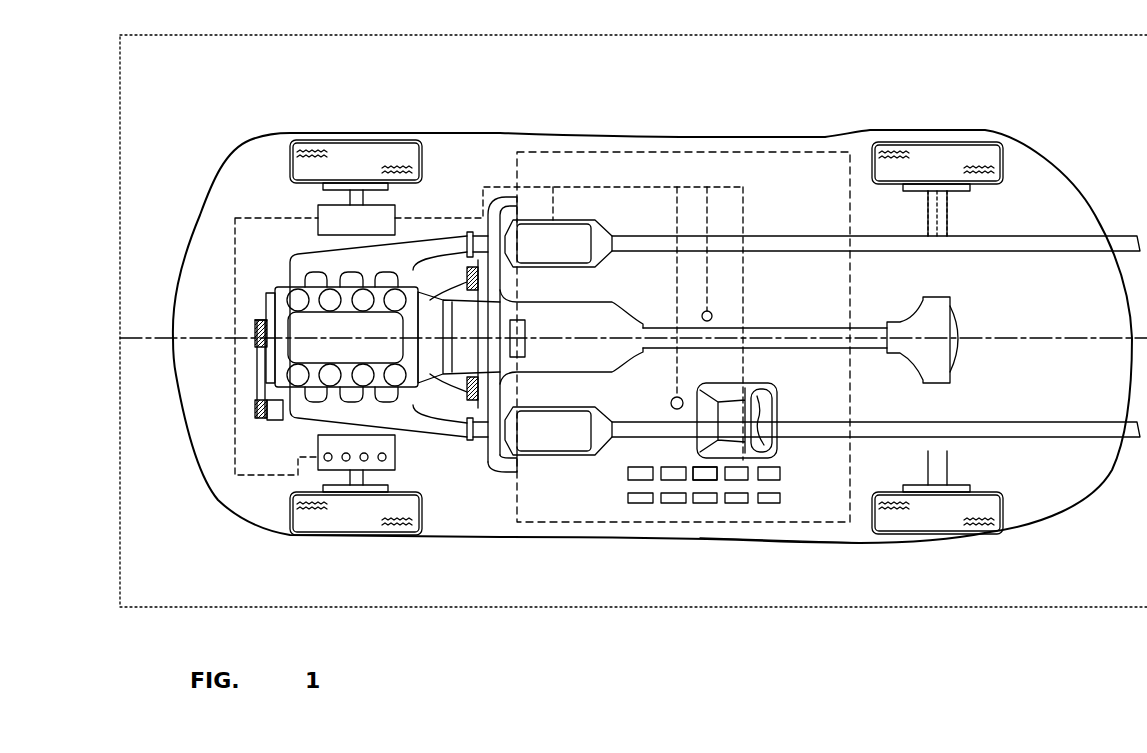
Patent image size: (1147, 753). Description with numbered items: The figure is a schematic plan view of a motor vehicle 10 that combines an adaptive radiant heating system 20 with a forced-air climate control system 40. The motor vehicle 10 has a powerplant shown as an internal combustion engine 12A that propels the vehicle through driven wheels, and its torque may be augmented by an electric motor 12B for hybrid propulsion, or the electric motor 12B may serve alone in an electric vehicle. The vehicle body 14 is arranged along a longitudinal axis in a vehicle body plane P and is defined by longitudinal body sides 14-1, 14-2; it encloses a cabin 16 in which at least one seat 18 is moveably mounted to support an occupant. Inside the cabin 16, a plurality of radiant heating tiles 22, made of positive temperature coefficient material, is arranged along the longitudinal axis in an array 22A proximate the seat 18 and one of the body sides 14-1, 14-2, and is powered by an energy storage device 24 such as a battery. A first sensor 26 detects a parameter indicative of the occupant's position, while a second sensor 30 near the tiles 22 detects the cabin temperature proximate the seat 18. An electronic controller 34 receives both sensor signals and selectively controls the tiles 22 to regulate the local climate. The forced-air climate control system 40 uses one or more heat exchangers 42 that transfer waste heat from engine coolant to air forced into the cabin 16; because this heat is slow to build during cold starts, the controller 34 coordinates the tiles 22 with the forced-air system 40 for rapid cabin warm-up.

The motor vehicle 10 is at (776, 123).
The internal combustion engine 12A is at (266, 302).
The electric motor 12B is at (518, 357).
The vehicle body 14 is at (1046, 375).
The longitudinal body side 14-1 is at (805, 538).
The longitudinal body side 14-2 is at (823, 137).
The cabin 16 is at (718, 523).
The seat 18 is at (779, 406).
The adaptive radiant heating system 20 is at (808, 297).
The radiant heating tiles 22 is at (692, 497).
The array 22A is at (708, 484).
The energy storage device 24 is at (235, 477).
The first sensor 26 is at (670, 402).
The second sensor 30 is at (713, 312).
The electronic controller 34 is at (316, 218).
The forced-air climate control system 40 is at (777, 342).
The heat exchanger 42 is at (462, 240).
The vehicle body plane P is at (741, 607).